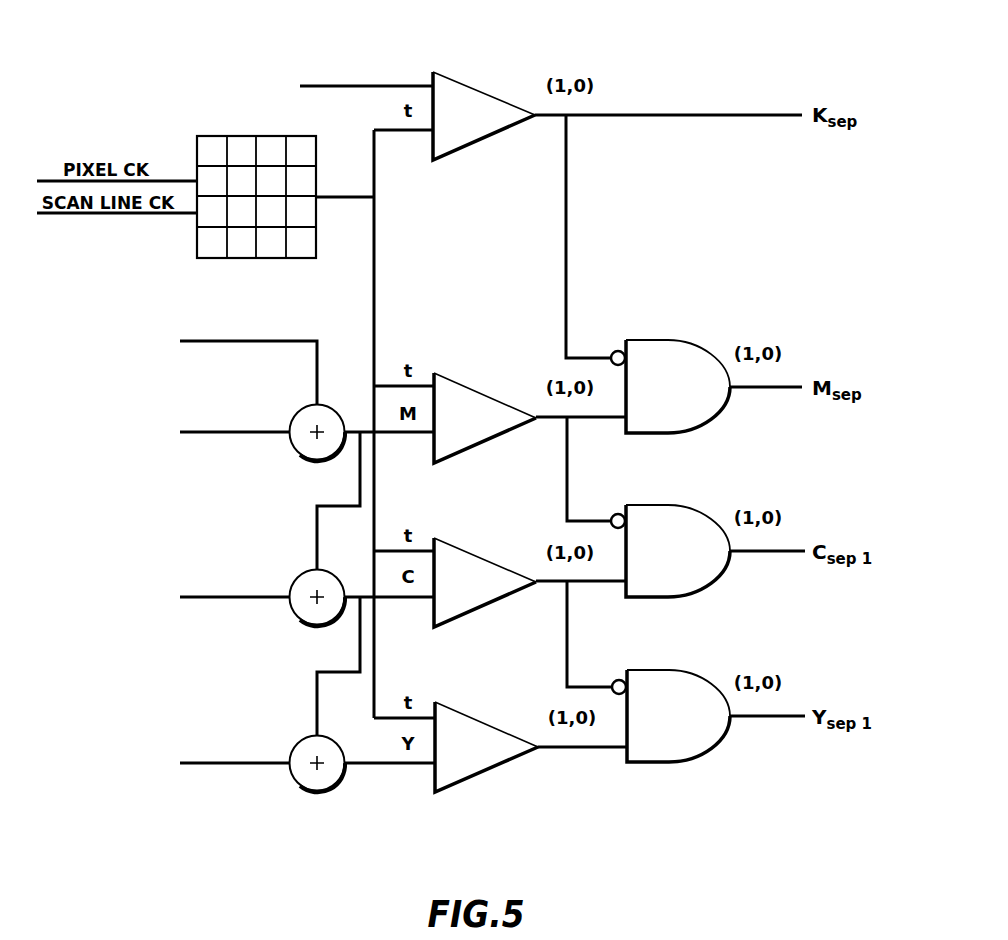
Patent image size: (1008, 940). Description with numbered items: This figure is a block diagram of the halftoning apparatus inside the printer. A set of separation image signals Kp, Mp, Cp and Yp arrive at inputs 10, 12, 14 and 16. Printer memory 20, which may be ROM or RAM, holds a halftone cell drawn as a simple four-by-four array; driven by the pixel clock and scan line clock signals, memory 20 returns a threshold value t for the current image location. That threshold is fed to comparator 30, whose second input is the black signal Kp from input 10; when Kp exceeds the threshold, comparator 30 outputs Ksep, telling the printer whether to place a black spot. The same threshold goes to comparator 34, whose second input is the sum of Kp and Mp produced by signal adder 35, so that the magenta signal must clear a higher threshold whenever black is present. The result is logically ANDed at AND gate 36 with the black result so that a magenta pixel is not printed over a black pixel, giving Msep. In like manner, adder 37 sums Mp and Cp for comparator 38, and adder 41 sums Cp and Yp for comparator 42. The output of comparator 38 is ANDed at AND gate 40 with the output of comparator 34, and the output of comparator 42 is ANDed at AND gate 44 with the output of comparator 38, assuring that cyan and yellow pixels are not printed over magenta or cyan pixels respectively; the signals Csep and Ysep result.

The input 10 is at (355, 85).
The input 12 is at (218, 431).
The input 14 is at (218, 596).
The input 16 is at (218, 762).
The printer memory 20 is at (210, 135).
The comparator 30 is at (487, 92).
The comparator 34 is at (489, 393).
The signal adder 35 is at (310, 462).
The AND gate 36 is at (685, 348).
The adder 37 is at (310, 627).
The comparator 38 is at (489, 557).
The AND gate 40 is at (685, 510).
The adder 41 is at (310, 793).
The comparator 42 is at (491, 722).
The AND gate 44 is at (685, 675).